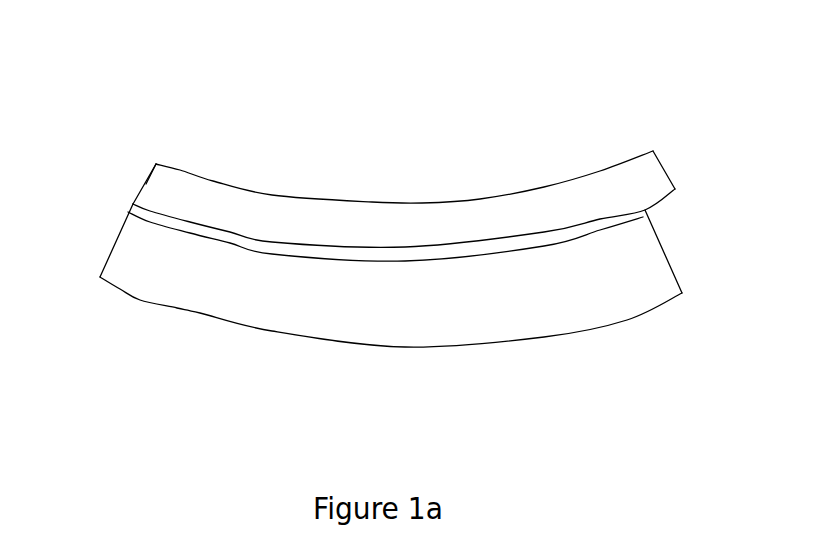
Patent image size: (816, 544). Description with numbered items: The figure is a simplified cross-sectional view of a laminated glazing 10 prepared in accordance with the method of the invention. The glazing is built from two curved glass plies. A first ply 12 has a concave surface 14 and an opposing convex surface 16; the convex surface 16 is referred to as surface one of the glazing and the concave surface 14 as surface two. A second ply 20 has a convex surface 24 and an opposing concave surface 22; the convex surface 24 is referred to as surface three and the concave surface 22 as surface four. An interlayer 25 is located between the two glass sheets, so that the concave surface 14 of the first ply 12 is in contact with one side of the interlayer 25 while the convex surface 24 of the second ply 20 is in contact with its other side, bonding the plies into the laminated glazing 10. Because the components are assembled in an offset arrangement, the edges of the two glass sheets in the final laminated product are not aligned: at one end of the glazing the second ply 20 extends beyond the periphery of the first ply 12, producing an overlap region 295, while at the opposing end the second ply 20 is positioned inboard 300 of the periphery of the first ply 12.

The laminated glazing 10 is at (583, 91).
The first ply 12 is at (106, 276).
The concave surface 14 is at (620, 228).
The convex surface 16 is at (627, 320).
The second ply 20 is at (170, 190).
The concave surface 22 is at (444, 200).
The convex surface 24 is at (405, 248).
The interlayer 25 is at (130, 201).
The overlap region 295 is at (665, 195).
The inboard position 300 is at (135, 192).